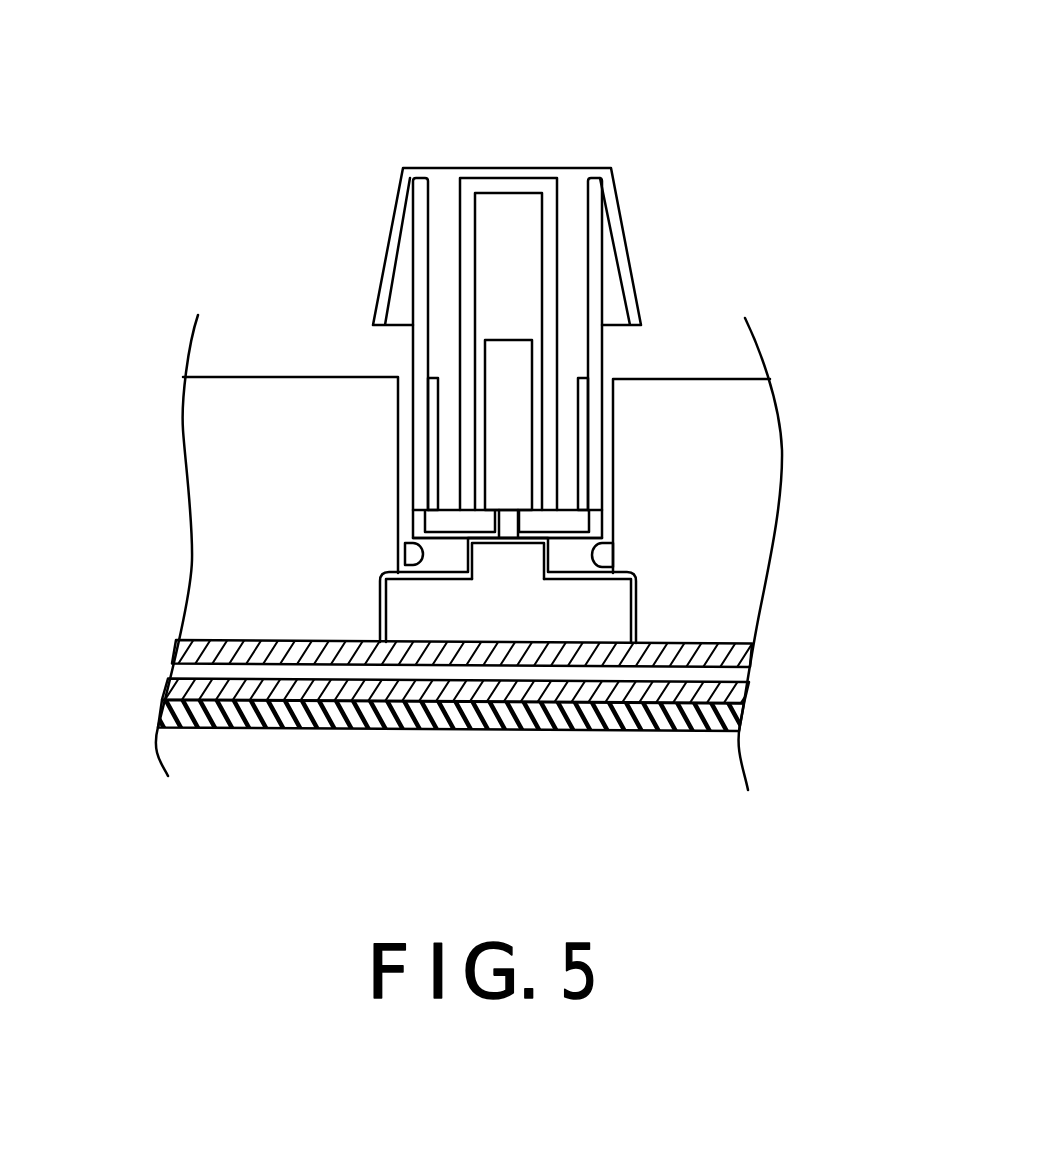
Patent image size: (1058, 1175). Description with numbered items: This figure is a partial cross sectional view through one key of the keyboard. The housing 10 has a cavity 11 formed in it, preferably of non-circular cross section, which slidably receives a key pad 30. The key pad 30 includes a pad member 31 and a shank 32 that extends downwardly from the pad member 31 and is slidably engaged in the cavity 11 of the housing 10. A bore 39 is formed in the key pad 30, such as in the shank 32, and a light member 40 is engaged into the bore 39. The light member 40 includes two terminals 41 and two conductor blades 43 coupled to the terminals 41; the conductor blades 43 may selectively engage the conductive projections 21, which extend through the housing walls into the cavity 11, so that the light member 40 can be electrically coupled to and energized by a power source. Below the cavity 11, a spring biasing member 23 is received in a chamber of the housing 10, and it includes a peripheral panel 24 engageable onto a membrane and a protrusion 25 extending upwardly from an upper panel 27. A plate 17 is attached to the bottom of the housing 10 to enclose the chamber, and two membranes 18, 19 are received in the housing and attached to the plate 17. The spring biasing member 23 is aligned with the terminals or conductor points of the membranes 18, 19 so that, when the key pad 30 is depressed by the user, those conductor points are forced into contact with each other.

The housing 10 is at (793, 479).
The cavity 11 is at (402, 469).
The plate 17 is at (738, 722).
The membrane 18 is at (747, 652).
The membrane 19 is at (735, 692).
The conductive projection 21 is at (412, 553).
The spring biasing member 23 is at (635, 613).
The peripheral panel 24 is at (380, 603).
The protrusion 25 is at (545, 554).
The upper panel 27 is at (452, 572).
The key pad 30 is at (390, 120).
The pad member 31 is at (492, 173).
The shank 32 is at (590, 297).
The bore 39 is at (542, 266).
The light member 40 is at (490, 352).
The terminal 41 is at (493, 515).
The conductor blade 43 is at (432, 388).